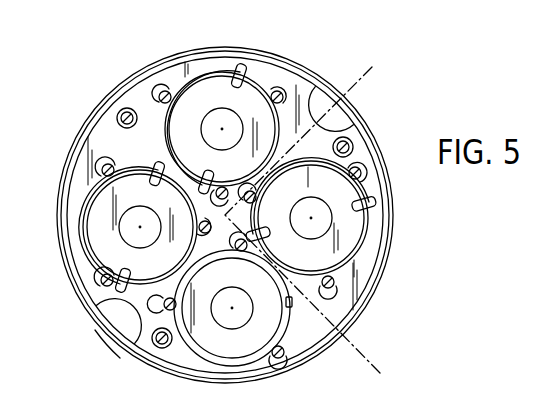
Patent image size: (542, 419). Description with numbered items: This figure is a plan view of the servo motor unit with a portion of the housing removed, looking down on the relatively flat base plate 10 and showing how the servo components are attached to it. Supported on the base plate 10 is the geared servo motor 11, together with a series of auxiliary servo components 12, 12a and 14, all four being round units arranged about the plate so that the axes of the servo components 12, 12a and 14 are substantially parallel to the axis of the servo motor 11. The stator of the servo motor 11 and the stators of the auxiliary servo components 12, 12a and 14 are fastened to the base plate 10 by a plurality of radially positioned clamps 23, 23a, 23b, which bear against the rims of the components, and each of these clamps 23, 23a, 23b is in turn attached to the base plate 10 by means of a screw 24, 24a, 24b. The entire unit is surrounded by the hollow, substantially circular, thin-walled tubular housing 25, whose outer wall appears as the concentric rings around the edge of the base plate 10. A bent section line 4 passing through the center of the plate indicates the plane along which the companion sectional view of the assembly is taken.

The section line 4 is at (372, 67).
The base plate 10 is at (365, 159).
The geared servo motor 11 is at (93, 238).
The auxiliary servo component 12 is at (203, 342).
The auxiliary servo component 12a is at (202, 87).
The auxiliary servo component 14 is at (353, 233).
The clamp 23 is at (105, 272).
The clamp 23a is at (115, 172).
The clamp 23b is at (360, 180).
The screw 24 is at (102, 287).
The screw 24a is at (107, 167).
The screw 24b is at (353, 167).
The housing 25 is at (108, 343).